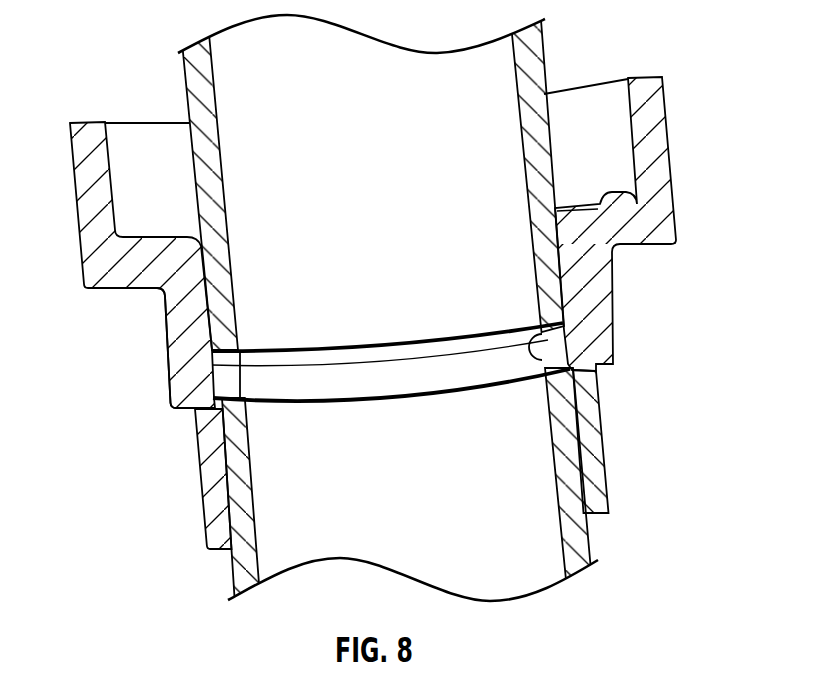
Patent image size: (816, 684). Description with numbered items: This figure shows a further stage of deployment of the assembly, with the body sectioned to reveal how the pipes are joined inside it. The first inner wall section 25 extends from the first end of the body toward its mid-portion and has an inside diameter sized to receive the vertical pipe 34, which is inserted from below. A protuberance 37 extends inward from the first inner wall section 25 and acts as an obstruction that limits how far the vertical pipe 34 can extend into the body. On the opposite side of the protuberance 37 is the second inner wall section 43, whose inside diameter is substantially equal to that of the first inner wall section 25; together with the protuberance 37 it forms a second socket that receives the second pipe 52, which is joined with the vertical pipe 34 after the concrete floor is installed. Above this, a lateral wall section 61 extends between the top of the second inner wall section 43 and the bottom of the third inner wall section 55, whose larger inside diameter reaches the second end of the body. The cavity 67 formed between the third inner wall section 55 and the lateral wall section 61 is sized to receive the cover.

The second pipe 52 is at (543, 44).
The cavity 67 is at (606, 122).
The third inner wall section 55 is at (96, 160).
The lateral wall section 61 is at (677, 237).
The second inner wall section 43 is at (166, 324).
The protuberance 37 is at (556, 336).
The first inner wall section 25 is at (201, 483).
The vertical pipe 34 is at (591, 549).